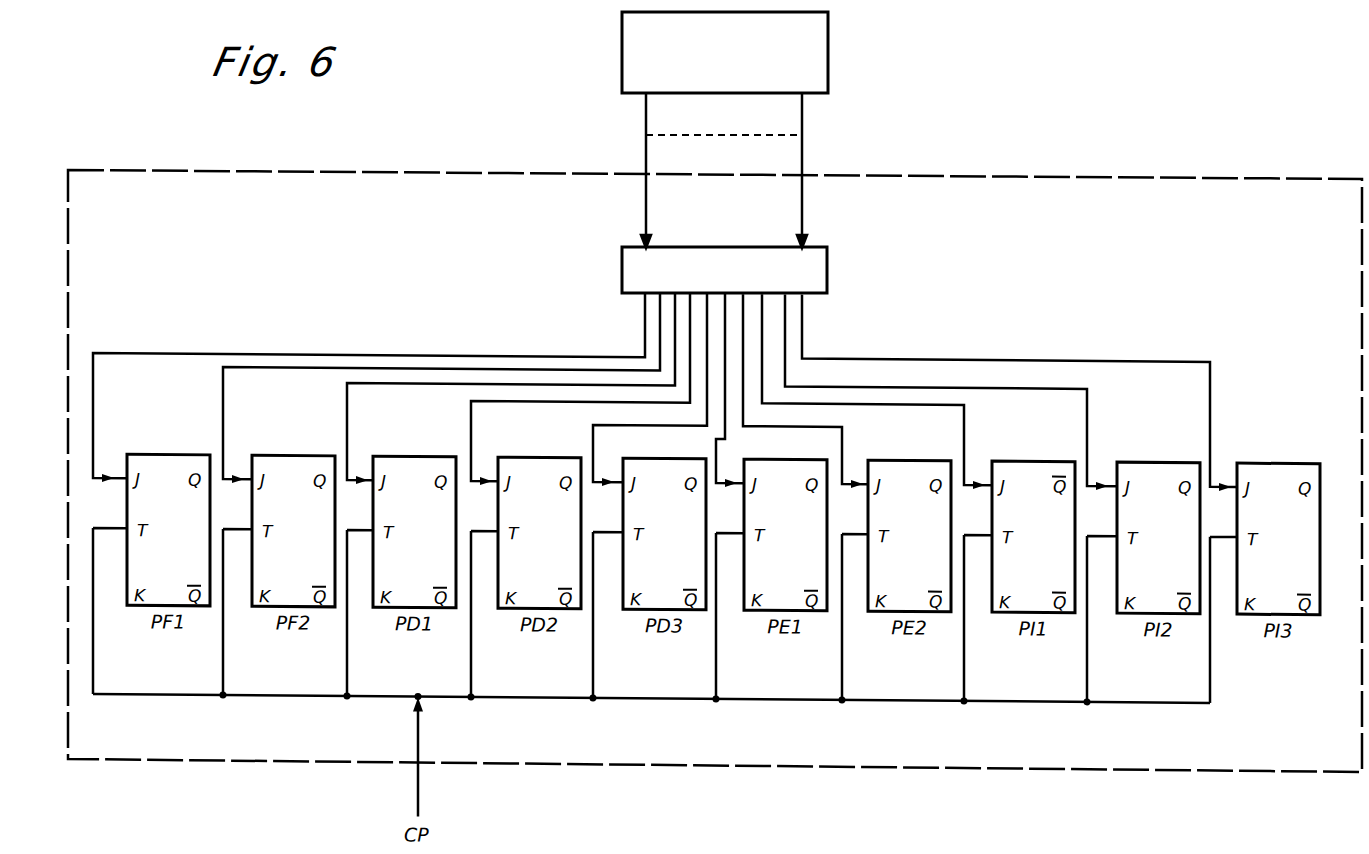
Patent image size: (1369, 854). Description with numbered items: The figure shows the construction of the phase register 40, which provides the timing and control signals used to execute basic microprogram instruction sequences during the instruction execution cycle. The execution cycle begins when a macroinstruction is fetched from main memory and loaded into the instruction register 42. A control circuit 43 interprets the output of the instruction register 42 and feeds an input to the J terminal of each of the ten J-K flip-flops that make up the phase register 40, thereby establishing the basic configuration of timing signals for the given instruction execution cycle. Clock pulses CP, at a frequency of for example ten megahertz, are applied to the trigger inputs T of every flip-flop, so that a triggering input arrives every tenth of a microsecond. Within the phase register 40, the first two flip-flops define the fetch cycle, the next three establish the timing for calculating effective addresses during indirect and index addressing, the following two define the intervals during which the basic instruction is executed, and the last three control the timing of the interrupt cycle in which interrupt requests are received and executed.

The phase register 40 is at (1090, 178).
The instruction register 42 is at (829, 62).
The control circuit 43 is at (828, 277).